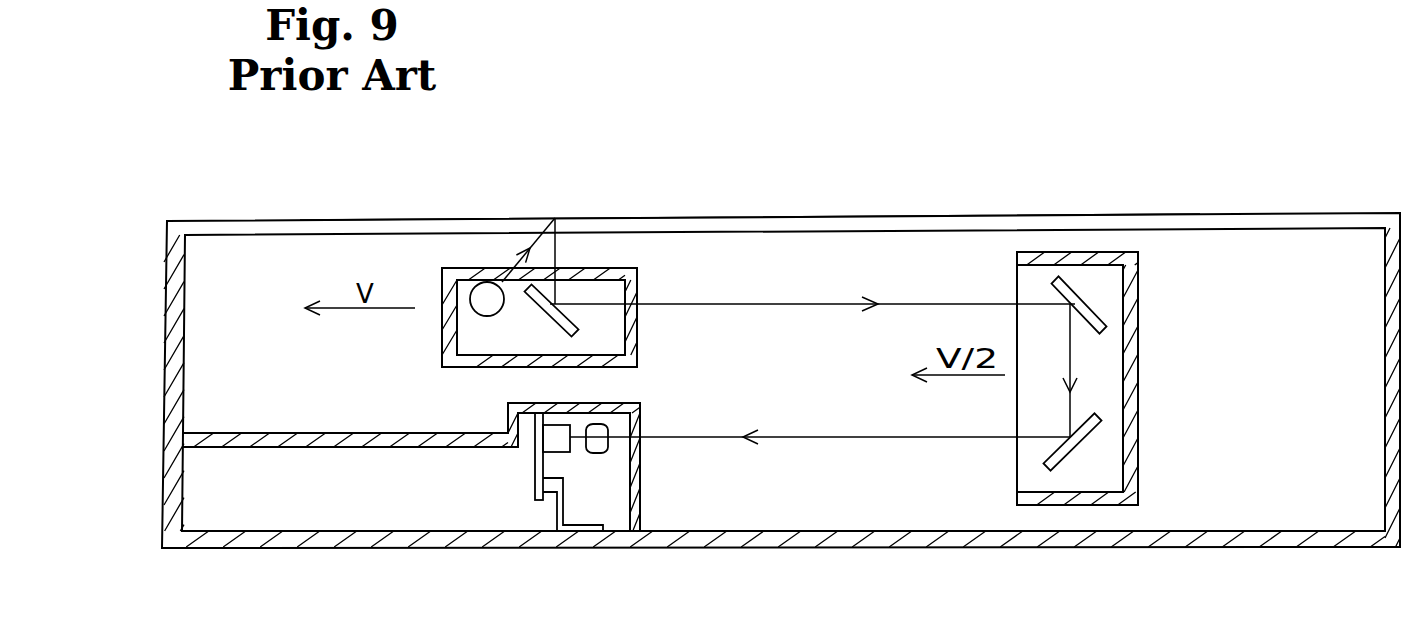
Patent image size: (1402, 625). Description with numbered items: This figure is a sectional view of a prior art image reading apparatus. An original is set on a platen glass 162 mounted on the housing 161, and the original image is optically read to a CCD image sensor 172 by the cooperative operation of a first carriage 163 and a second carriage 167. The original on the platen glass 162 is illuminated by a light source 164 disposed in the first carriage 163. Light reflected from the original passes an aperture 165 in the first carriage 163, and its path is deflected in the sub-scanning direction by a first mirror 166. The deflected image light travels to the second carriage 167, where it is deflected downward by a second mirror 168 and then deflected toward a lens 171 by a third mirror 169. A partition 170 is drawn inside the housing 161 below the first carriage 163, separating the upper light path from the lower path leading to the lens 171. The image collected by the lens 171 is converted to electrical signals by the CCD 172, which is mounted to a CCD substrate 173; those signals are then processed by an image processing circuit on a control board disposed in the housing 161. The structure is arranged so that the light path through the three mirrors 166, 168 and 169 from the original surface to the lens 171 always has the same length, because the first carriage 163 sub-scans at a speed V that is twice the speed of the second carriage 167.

The housing 161 is at (175, 313).
The platen glass 162 is at (226, 232).
The first carriage 163 is at (452, 283).
The light source 164 is at (485, 308).
The aperture 165 is at (582, 272).
The first mirror 166 is at (577, 327).
The second carriage 167 is at (1135, 312).
The second mirror 168 is at (1080, 290).
The third mirror 169 is at (1070, 460).
The partition wall 170 is at (226, 442).
The lens 171 is at (597, 448).
The CCD 172 is at (560, 442).
The CCD substrate 173 is at (535, 467).